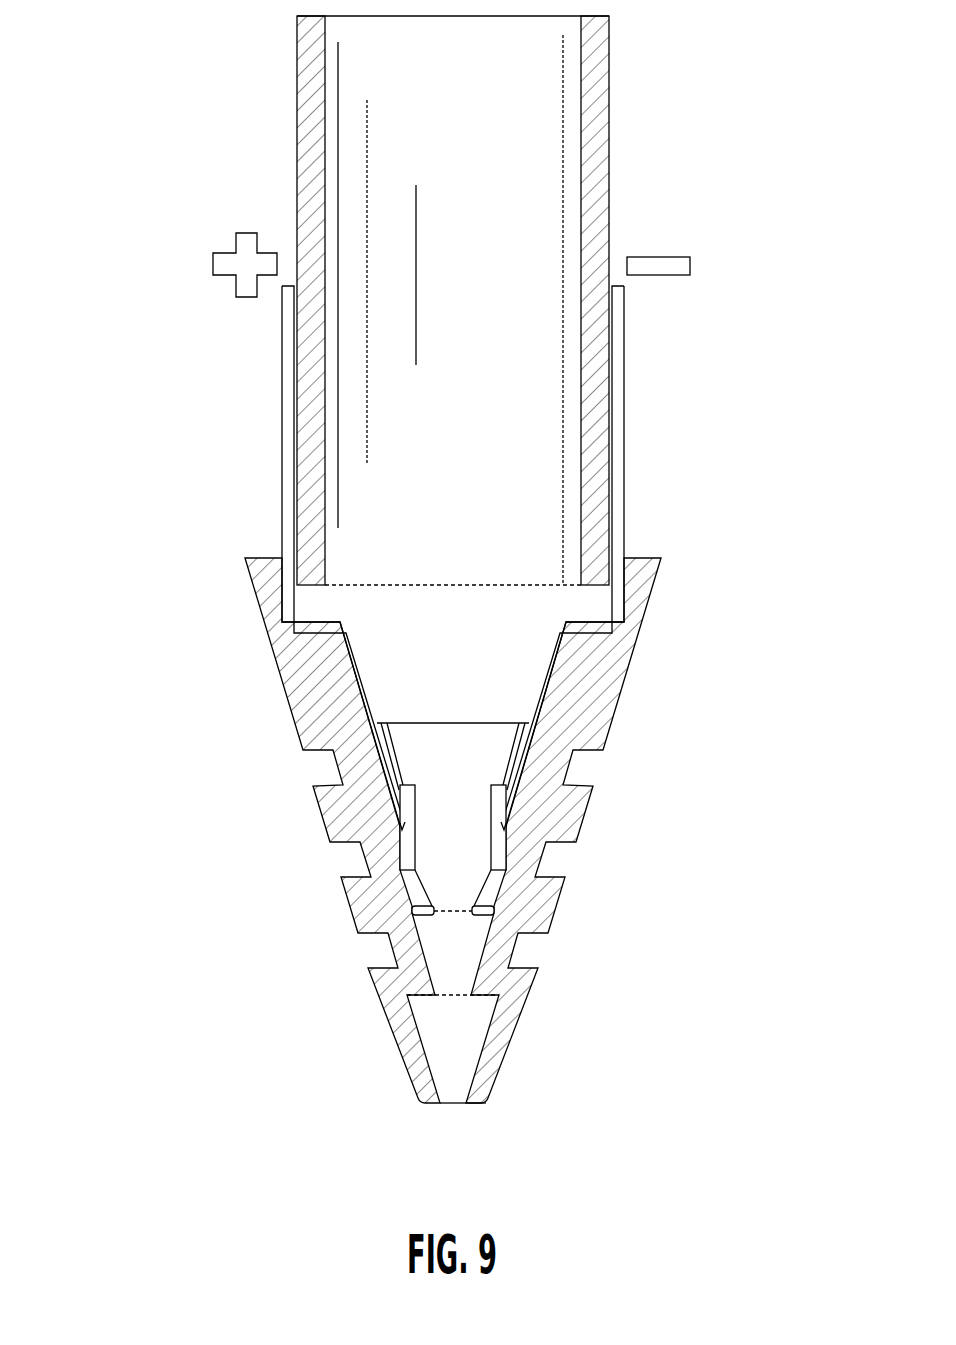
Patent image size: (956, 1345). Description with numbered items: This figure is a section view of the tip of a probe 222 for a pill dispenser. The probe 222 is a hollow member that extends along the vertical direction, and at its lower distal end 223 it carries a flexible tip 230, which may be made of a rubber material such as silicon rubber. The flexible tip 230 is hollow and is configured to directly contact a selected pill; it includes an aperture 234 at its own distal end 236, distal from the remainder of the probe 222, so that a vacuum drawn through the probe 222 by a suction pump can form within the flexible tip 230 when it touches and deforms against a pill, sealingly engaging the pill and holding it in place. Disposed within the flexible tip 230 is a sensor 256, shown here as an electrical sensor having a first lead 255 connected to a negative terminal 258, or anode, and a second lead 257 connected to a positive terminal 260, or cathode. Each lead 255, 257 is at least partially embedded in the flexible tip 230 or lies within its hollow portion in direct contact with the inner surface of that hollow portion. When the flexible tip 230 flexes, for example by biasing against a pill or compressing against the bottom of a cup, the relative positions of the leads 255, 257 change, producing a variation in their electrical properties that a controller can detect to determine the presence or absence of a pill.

The probe 222 is at (609, 140).
The distal end 223 is at (542, 585).
The flexible tip 230 is at (270, 910).
The aperture 234 is at (447, 1117).
The distal end of the flexible tip 236 is at (480, 1103).
The first lead 255 is at (623, 408).
The sensor 256 is at (177, 462).
The second lead 257 is at (282, 410).
The negative terminal 258 is at (690, 266).
The positive terminal 260 is at (213, 264).